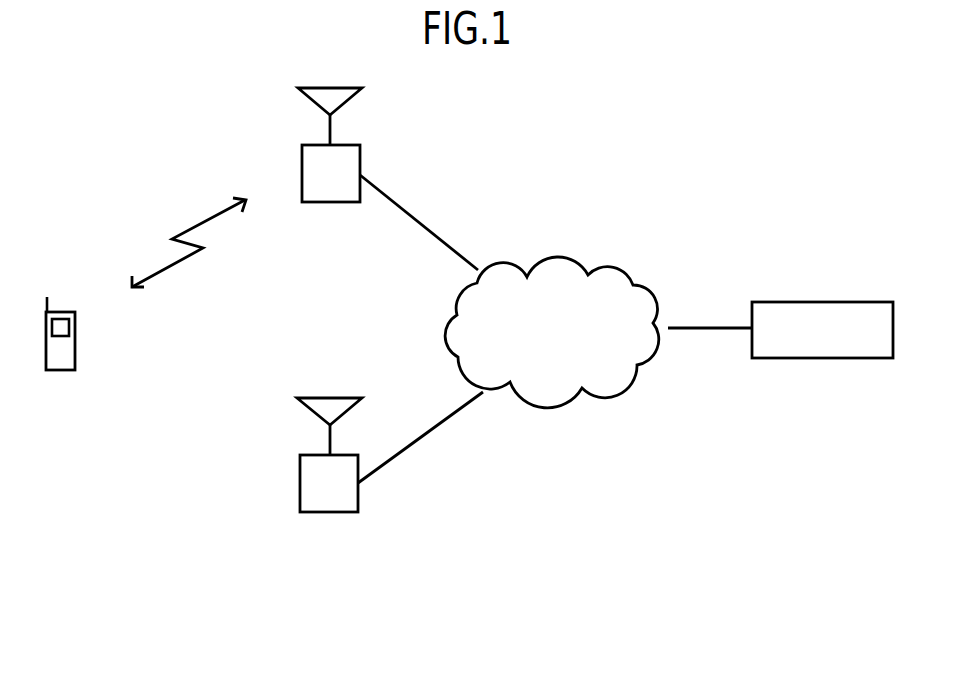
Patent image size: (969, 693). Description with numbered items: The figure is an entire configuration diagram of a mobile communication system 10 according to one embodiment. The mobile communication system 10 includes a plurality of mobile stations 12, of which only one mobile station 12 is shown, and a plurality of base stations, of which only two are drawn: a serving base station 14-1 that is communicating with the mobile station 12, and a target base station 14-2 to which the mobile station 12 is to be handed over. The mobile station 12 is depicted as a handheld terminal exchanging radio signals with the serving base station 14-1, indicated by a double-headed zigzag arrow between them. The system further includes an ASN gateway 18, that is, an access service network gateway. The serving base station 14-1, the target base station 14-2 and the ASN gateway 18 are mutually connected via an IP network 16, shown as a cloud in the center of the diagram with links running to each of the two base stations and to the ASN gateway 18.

The mobile communication system 10 is at (466, 552).
The mobile station 12 is at (60, 312).
The serving base station 14-1 is at (302, 172).
The target base station 14-2 is at (300, 483).
The IP network 16 is at (556, 259).
The ASN gateway 18 is at (848, 302).